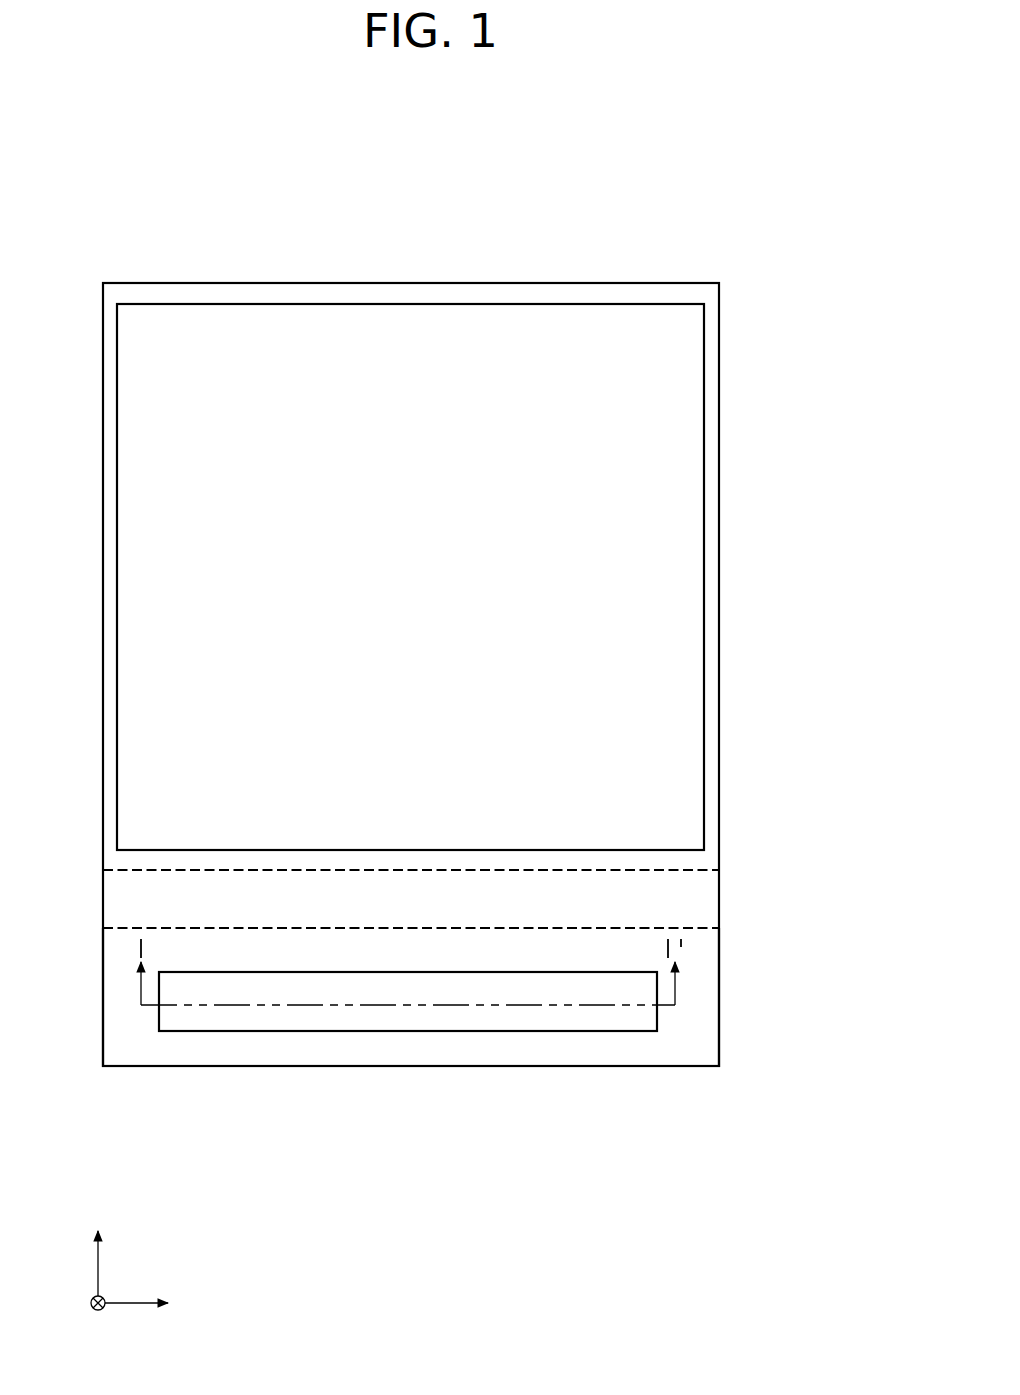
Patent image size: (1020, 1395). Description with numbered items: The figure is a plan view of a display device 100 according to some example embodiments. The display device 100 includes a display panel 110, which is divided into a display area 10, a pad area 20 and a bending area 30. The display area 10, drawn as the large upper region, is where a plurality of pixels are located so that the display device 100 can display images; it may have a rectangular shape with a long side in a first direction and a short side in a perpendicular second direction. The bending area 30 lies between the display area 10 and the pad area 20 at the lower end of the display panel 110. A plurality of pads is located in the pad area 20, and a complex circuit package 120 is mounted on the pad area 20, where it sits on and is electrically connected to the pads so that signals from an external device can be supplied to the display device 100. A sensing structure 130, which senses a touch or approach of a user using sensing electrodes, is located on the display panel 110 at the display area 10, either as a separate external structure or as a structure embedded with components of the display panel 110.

The display device 100 is at (750, 250).
The display panel 110 is at (783, 667).
The display area 10 is at (719, 681).
The pad area 20 is at (719, 985).
The bending area 30 is at (719, 895).
The complex circuit package 120 is at (410, 1031).
The sensing structure 130 is at (704, 427).